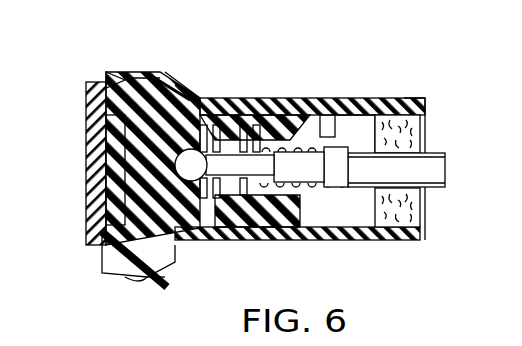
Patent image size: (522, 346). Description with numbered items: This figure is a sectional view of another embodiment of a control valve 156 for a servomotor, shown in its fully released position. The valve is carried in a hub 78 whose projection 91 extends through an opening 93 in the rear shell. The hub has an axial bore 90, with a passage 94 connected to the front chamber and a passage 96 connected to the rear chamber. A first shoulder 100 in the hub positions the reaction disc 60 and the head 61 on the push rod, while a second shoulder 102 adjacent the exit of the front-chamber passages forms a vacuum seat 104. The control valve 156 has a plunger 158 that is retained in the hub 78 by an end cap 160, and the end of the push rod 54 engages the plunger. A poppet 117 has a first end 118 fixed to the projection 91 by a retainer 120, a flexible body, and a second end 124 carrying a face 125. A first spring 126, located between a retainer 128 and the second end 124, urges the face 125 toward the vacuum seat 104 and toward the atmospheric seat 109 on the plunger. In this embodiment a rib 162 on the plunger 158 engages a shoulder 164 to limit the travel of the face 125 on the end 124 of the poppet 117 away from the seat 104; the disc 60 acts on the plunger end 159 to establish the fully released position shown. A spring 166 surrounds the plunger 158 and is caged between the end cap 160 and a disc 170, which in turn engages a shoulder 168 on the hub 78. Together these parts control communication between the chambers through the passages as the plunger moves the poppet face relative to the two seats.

The push rod 54 is at (436, 178).
The reaction disc 60 is at (113, 180).
The head 61 is at (95, 135).
The hub 78 is at (157, 280).
The axial bore 90 is at (361, 230).
The projection 91 is at (386, 100).
The opening 93 is at (404, 100).
The passage 94 is at (165, 72).
The passage 96 is at (217, 250).
The first shoulder 100 is at (100, 231).
The second shoulder 102 is at (252, 240).
The vacuum seat 104 is at (247, 97).
The atmospheric seat 109 is at (250, 240).
The poppet 117 is at (287, 97).
The first end 118 is at (321, 97).
The retainer 120 is at (337, 97).
The second end 124 is at (274, 97).
The face 125 is at (258, 105).
The first spring 126 is at (348, 247).
The retainer 128 is at (348, 147).
The control valve 156 is at (284, 235).
The plunger 158 is at (130, 78).
The end 159 is at (118, 75).
The end cap 160 is at (88, 90).
The rib 162 is at (176, 65).
The shoulder 164 is at (224, 97).
The spring 166 is at (125, 277).
The shoulder 168 is at (185, 75).
The disc 170 is at (194, 257).